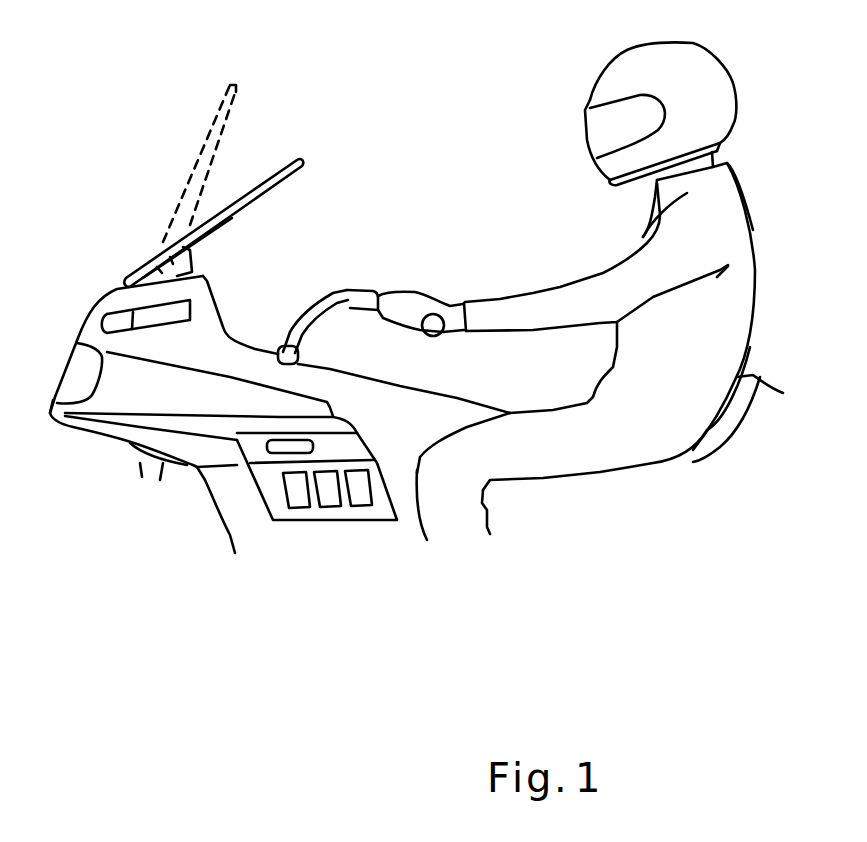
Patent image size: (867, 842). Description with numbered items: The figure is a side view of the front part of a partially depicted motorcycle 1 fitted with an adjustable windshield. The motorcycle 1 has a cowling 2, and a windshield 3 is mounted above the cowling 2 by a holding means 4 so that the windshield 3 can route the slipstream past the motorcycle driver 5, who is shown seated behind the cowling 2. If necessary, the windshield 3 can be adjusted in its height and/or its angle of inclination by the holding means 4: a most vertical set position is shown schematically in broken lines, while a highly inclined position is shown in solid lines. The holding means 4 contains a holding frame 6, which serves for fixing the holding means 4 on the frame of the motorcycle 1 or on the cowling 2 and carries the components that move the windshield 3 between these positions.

The motorcycle 1 is at (233, 580).
The cowling 2 is at (128, 400).
The windshield 3 is at (272, 183).
The holding means 4 is at (208, 253).
The motorcycle driver 5 is at (597, 452).
The holding frame 6 is at (227, 229).